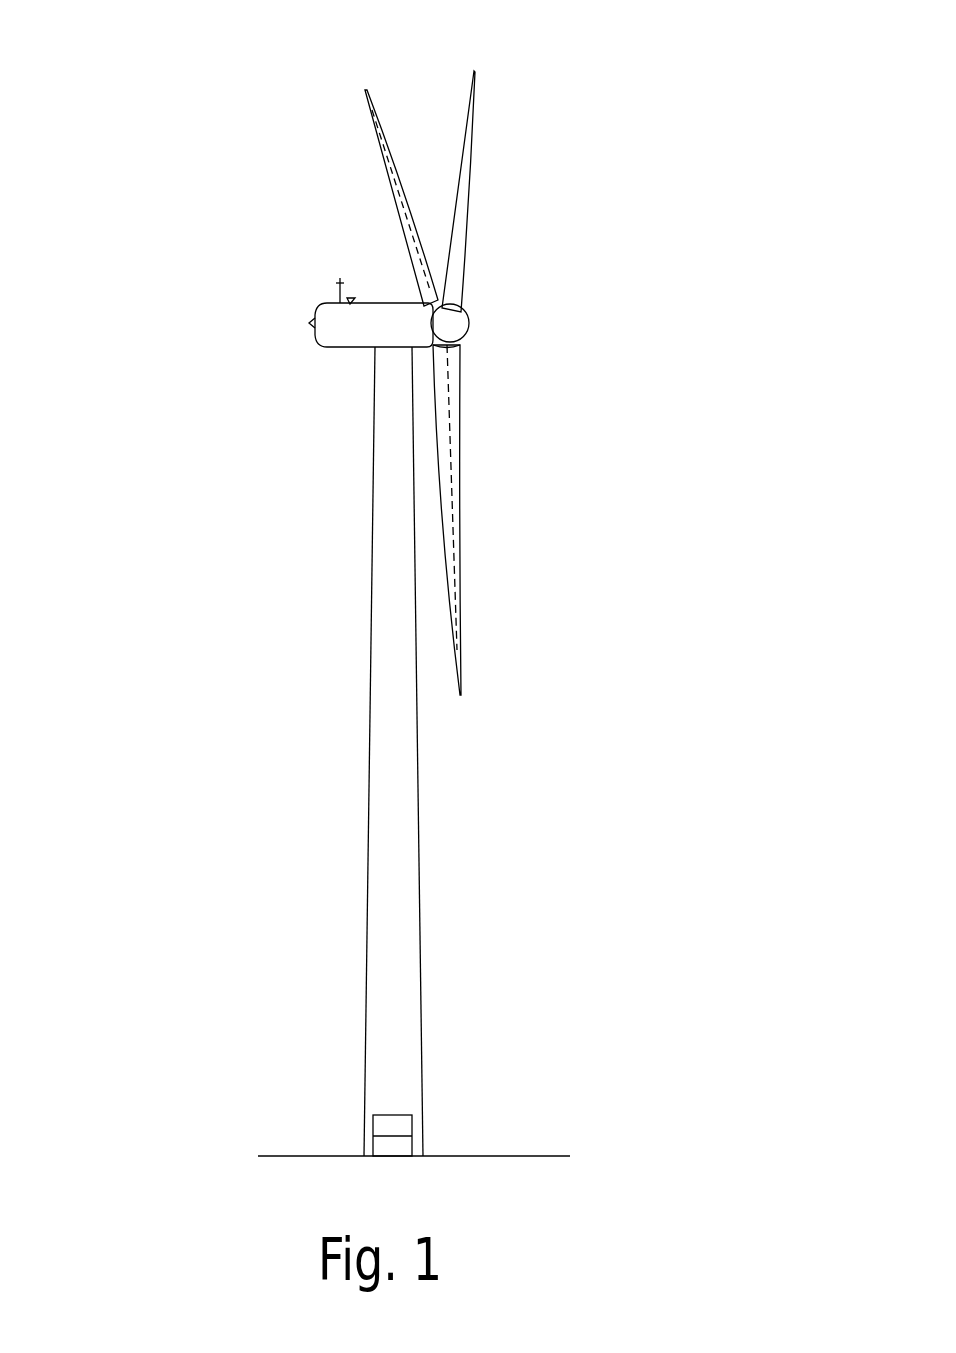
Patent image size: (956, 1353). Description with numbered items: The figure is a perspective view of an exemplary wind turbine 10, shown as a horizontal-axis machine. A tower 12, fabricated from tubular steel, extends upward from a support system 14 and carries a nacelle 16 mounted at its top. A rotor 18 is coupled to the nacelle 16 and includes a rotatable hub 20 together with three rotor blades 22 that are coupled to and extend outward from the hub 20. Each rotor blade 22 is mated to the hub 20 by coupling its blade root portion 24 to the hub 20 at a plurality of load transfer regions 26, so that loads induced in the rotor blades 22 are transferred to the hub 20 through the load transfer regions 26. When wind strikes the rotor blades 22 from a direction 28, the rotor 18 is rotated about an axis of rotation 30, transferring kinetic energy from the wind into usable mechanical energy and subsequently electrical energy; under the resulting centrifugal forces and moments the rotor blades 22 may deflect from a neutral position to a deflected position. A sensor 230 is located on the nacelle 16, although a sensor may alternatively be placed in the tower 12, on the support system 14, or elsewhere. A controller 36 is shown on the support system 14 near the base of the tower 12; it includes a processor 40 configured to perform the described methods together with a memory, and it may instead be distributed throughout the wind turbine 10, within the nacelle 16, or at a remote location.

The wind turbine 10 is at (128, 80).
The tower 12 is at (367, 917).
The support system 14 is at (318, 1155).
The nacelle 16 is at (350, 346).
The rotor 18 is at (495, 215).
The rotatable hub 20 is at (469, 314).
The rotor blade 22 is at (388, 158).
The blade root portion 24 is at (455, 435).
The load transfer region 26 is at (450, 343).
The wind direction 28 is at (705, 323).
The axis of rotation 30 is at (413, 1120).
The controller 36 is at (378, 1085).
The processor 40 is at (390, 1157).
The sensor 230 is at (340, 298).